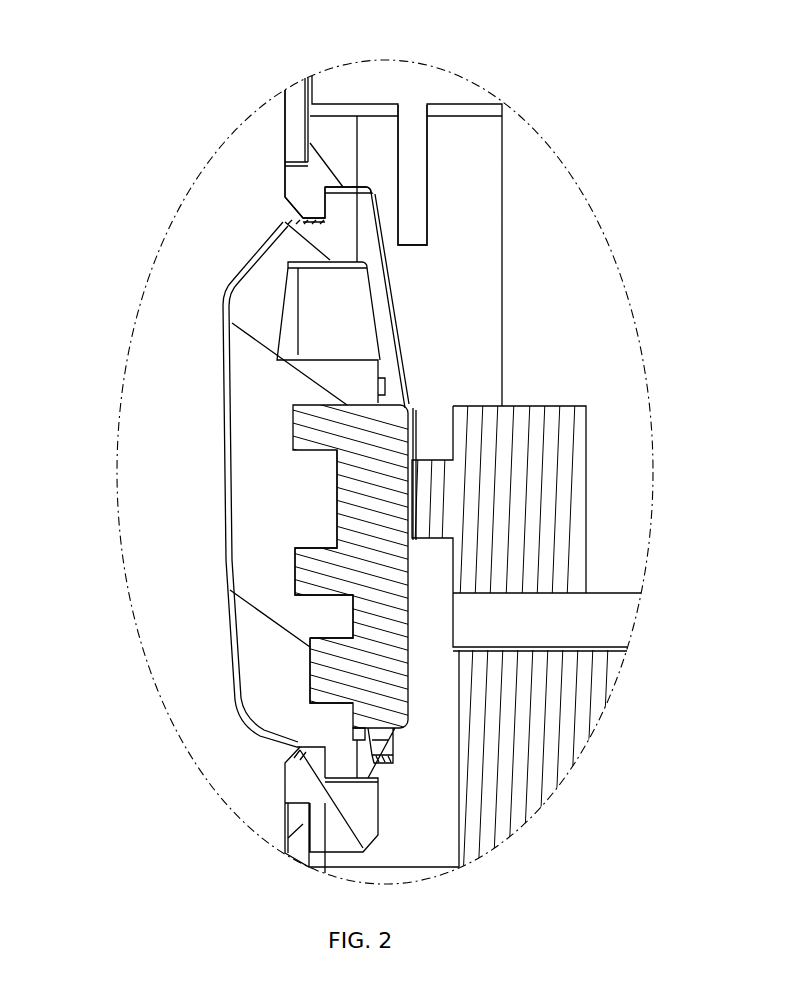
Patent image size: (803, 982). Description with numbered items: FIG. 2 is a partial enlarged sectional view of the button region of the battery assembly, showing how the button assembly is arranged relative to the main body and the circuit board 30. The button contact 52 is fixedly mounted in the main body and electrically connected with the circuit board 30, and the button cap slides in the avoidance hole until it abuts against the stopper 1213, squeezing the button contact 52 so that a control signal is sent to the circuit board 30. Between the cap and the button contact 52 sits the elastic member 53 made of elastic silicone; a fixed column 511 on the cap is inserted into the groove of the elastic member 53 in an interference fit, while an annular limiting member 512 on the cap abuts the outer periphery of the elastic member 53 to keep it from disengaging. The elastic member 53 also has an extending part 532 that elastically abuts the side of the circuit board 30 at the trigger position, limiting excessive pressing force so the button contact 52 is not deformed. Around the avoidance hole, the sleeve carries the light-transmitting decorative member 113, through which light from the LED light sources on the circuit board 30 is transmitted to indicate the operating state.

The light-transmitting decorative member 113 is at (335, 158).
The stopper 1213 is at (413, 180).
The elastic member 53 is at (384, 495).
The button contact 52 is at (520, 463).
The circuit board 30 is at (480, 647).
The limiting member 512 is at (320, 377).
The fixed column 511 is at (317, 498).
The extending part 532 is at (380, 658).